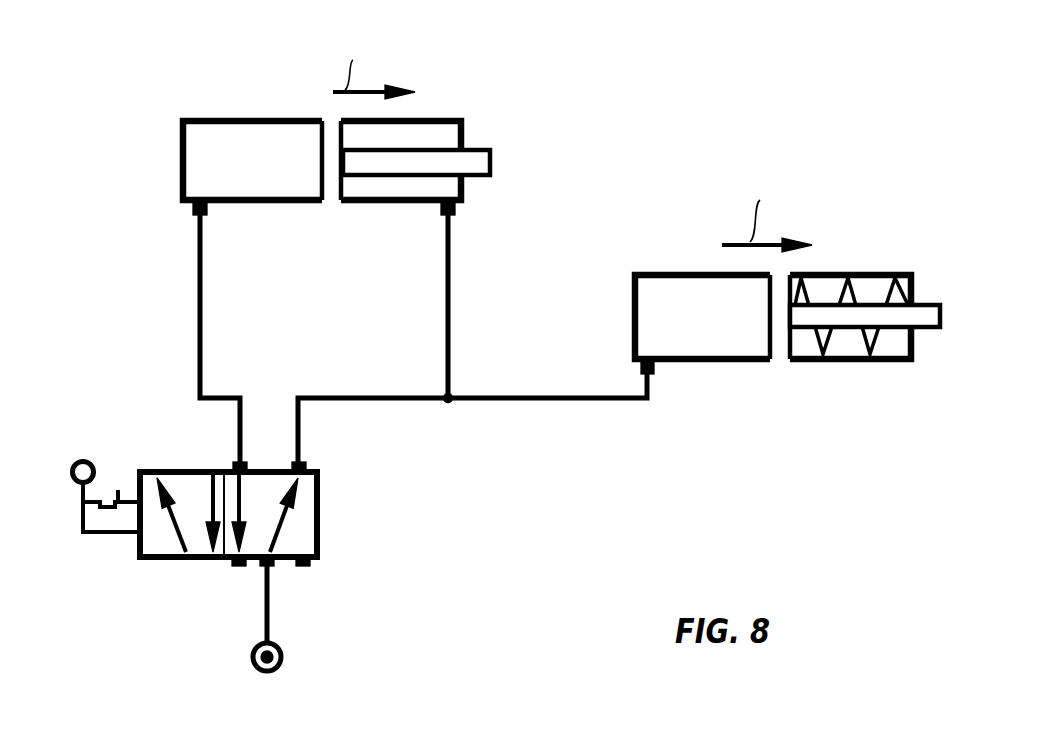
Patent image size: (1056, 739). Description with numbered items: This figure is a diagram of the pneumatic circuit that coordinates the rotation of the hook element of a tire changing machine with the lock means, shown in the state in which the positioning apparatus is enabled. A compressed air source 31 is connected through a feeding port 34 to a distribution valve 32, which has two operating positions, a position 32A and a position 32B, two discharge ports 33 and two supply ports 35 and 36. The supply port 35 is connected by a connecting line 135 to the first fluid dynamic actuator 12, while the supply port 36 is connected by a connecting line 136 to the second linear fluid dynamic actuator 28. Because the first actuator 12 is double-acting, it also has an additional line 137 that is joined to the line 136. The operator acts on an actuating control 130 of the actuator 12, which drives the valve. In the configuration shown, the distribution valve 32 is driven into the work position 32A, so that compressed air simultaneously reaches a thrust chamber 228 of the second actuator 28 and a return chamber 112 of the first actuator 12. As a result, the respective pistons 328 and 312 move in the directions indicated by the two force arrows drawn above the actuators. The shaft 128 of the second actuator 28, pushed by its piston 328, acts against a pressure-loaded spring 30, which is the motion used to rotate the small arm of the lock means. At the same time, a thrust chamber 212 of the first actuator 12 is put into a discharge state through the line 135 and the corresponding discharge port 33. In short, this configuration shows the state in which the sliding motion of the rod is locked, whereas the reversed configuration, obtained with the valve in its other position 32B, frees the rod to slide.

The first fluid dynamic actuator 12 is at (322, 171).
The thrust chamber of the first fluid dynamic actuator 212 is at (222, 150).
The piston of the first actuator 312 is at (333, 205).
The return chamber of the first linear actuator 112 is at (445, 140).
The connecting line 135 is at (200, 306).
The additional line 137 is at (452, 276).
The connecting line 136 is at (372, 398).
The second linear fluid dynamic actuator 28 is at (827, 289).
The thrust chamber of the second linear fluid dynamic actuator 228 is at (690, 340).
The piston of the second actuator 328 is at (783, 345).
The shaft 128 is at (922, 340).
The pressure-loaded spring 30 is at (860, 290).
The distribution valve 32 is at (265, 560).
The work position of the distribution valve 32A is at (312, 530).
The second position of the distribution valve 32B is at (183, 488).
The supply port 35 is at (234, 478).
The supply port 36 is at (306, 464).
The discharge port 33 is at (234, 566).
The feeding port 34 is at (250, 566).
The compressed air source 31 is at (283, 668).
The actuating control 130 is at (109, 555).